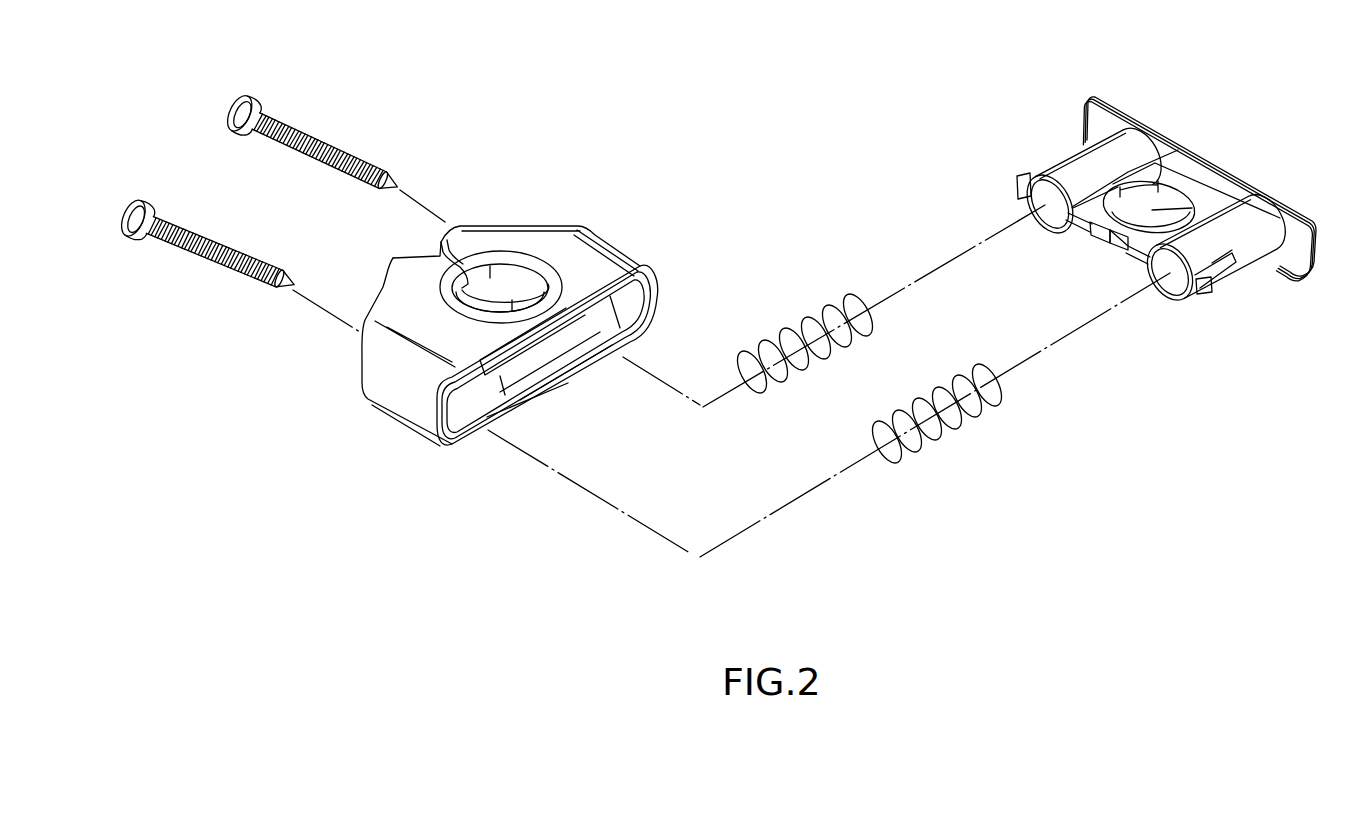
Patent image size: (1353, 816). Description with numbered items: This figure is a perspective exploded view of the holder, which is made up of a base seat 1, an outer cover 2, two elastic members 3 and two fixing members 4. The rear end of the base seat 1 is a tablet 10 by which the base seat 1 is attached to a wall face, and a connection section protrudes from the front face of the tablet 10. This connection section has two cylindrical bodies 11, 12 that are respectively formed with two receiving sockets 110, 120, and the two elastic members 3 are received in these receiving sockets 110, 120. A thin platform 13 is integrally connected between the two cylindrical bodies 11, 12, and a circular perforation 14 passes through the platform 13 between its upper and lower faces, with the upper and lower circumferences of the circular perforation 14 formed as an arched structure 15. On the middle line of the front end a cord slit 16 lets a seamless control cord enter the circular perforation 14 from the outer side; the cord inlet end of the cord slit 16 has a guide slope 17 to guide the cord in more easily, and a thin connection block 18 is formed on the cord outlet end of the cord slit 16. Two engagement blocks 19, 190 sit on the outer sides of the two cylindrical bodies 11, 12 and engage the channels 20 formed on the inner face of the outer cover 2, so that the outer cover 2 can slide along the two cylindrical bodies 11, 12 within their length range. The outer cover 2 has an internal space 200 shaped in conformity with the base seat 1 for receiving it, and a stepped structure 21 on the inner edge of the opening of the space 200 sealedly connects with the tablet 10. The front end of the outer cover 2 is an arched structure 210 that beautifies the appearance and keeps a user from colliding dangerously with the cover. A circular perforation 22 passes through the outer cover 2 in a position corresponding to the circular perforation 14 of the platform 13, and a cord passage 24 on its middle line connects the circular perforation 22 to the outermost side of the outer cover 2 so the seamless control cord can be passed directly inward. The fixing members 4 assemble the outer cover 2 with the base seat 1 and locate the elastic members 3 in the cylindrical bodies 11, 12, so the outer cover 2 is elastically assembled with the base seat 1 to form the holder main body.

The base seat 1 is at (1120, 233).
The tablet 10 is at (1203, 147).
The cylindrical body 11 is at (1046, 168).
The receiving socket 110 is at (1038, 203).
The cylindrical body 12 is at (1228, 283).
The receiving socket 120 is at (1178, 285).
The thin platform 13 is at (1191, 139).
The circular perforation 14 is at (1227, 277).
The arched structure 15 is at (1130, 192).
The cord slit 16 is at (1108, 242).
The guide slope 17 is at (1098, 237).
The thin connection block 18 is at (1123, 230).
The engagement block 19 is at (1205, 287).
The engagement block 190 is at (979, 152).
The outer cover 2 is at (514, 298).
The channel 20 is at (592, 322).
The internal space 200 is at (612, 328).
The stepped structure 21 is at (657, 298).
The arched structure 210 is at (403, 260).
The circular perforation 22 is at (500, 315).
The cord passage 24 is at (442, 240).
The elastic member 3 is at (808, 322).
The fixing member 4 is at (353, 162).